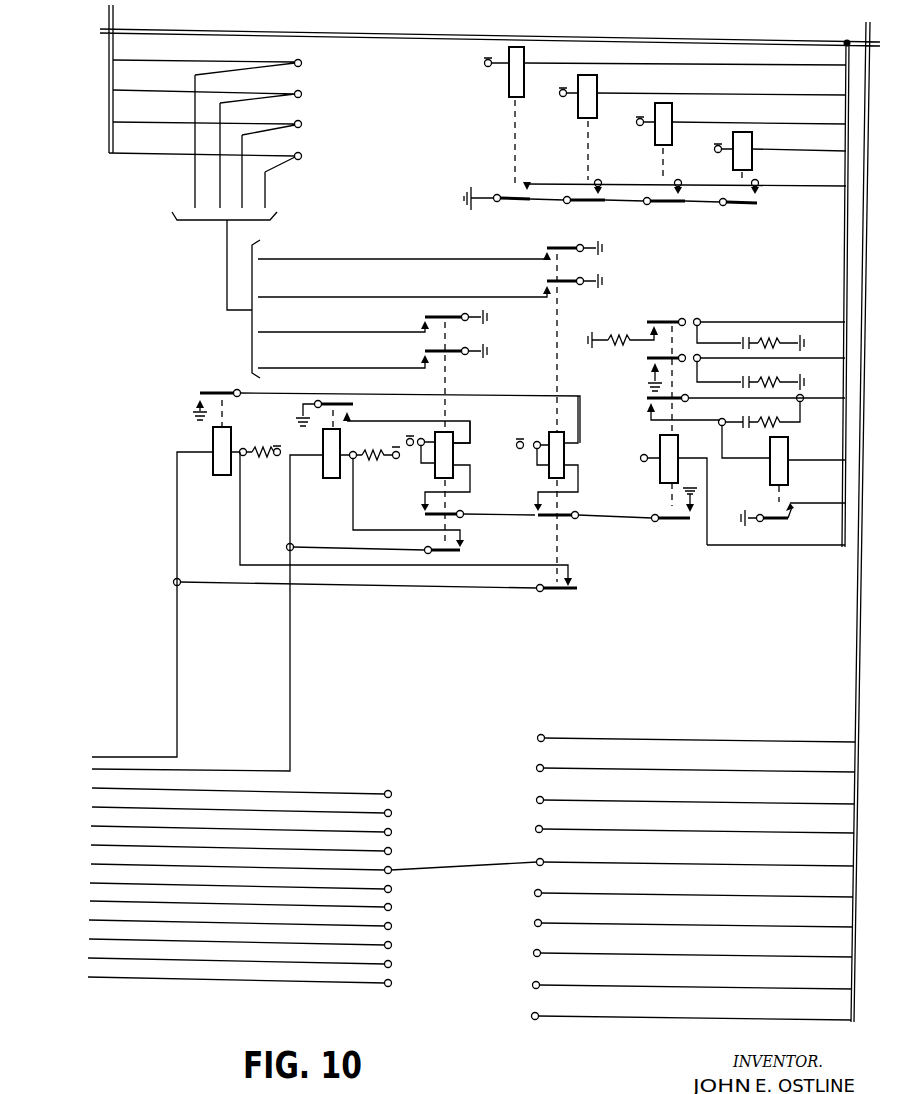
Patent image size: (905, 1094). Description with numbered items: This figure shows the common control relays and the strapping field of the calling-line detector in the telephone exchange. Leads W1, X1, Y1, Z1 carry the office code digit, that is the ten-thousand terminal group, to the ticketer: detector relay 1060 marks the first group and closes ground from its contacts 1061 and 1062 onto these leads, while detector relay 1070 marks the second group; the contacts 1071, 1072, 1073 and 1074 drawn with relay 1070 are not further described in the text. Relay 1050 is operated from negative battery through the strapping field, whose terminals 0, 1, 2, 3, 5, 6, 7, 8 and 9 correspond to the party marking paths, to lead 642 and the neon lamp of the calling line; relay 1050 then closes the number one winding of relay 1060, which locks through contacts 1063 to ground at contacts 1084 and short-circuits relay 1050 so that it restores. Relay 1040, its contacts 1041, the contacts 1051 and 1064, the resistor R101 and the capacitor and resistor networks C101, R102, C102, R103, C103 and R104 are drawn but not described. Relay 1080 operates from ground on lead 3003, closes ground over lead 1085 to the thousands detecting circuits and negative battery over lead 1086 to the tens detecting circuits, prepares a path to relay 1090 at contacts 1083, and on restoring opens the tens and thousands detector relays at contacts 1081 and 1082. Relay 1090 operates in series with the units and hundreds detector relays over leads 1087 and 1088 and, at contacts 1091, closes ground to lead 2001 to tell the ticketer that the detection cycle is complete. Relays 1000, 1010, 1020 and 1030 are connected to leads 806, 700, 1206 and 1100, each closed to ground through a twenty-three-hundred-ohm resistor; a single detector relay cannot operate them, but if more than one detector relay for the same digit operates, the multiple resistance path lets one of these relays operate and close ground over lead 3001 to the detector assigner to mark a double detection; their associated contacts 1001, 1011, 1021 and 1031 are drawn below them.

The W1 lead W1 is at (152, 57).
The X1 lead X1 is at (152, 87).
The Y1 lead Y1 is at (152, 118).
The Z1 lead Z1 is at (152, 150).
The relay 1000 is at (509, 87).
The relay 1010 is at (578, 113).
The relay 1020 is at (655, 140).
The relay 1030 is at (733, 160).
The lead 806 is at (835, 68).
The lead 700 is at (837, 99).
The lead 1206 is at (839, 126).
The lead 1100 is at (839, 153).
The lead 3001 is at (840, 188).
The relay contact 1001 is at (510, 188).
The relay contact 1011 is at (586, 190).
The relay contact 1021 is at (662, 190).
The relay contact 1031 is at (762, 195).
The relay contact 1071 is at (542, 249).
The relay contact 1072 is at (542, 283).
The contacts 1061 is at (422, 319).
The contacts 1062 is at (420, 355).
The relay contact 1041 is at (198, 400).
The relay contact 1051 is at (360, 410).
The relay 1040 is at (213, 438).
The relay 1050 is at (323, 438).
The detector relay 1060 is at (456, 453).
The detector relay 1070 is at (553, 430).
The contacts 1063 is at (425, 513).
The relay contact 1073 is at (538, 513).
The relay contact 1064 is at (462, 545).
The relay contact 1074 is at (582, 586).
The resistor R101 is at (608, 336).
The contacts 1081 is at (643, 324).
The contacts 1082 is at (648, 364).
The contacts 1083 is at (648, 403).
The lead 1086 is at (795, 313).
The lead 1085 is at (841, 359).
The lead 1087 is at (841, 397).
The lead 1088 is at (837, 459).
The lead 2001 is at (836, 499).
The lead 3003 is at (832, 545).
The capacitor C101 is at (745, 340).
The capacitor C102 is at (747, 378).
The capacitor C103 is at (747, 416).
The resistor R102 is at (775, 340).
The resistor R103 is at (779, 376).
The resistor R104 is at (777, 413).
The relay 1080 is at (660, 443).
The detector relay 1090 is at (770, 445).
The contacts 1084 is at (680, 512).
The contacts 1091 is at (783, 515).
The party 0 strapping terminal 0 is at (697, 729).
The party 1 strapping terminal 1 is at (696, 759).
The party 2 strapping terminal 2 is at (696, 791).
The party 3 strapping terminal 3 is at (695, 820).
The lead 642 is at (622, 855).
The party 5 strapping terminal 5 is at (694, 884).
The party 6 strapping terminal 6 is at (694, 914).
The party 7 strapping terminal 7 is at (693, 944).
The party 8 strapping terminal 8 is at (693, 976).
The party 9 strapping terminal 9 is at (692, 1007).